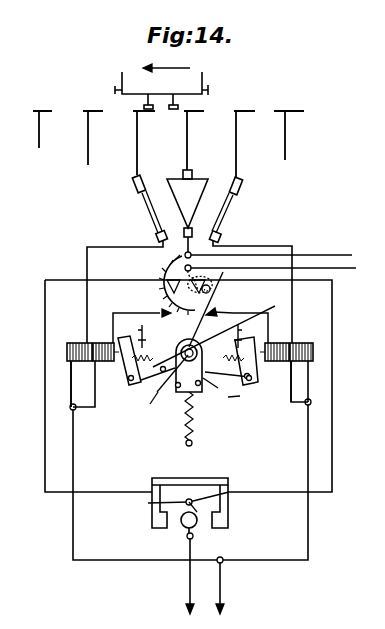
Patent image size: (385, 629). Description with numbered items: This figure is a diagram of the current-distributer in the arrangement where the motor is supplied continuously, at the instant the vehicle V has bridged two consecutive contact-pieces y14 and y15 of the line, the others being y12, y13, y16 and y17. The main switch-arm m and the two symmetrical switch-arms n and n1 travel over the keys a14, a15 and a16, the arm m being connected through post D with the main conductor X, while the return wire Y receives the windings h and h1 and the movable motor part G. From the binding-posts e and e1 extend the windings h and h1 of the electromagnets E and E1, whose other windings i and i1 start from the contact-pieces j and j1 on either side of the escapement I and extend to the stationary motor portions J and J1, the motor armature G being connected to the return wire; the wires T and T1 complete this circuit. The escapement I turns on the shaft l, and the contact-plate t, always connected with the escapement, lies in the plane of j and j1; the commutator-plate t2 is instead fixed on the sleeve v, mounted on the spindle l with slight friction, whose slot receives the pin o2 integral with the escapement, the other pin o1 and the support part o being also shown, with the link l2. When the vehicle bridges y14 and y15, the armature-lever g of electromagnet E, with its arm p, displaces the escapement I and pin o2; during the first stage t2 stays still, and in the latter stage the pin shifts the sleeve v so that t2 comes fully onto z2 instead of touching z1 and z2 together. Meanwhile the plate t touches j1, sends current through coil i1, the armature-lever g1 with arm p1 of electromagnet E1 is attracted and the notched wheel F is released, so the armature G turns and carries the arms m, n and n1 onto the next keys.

The vehicle V is at (161, 86).
The contact-piece y12 is at (35, 129).
The contact-piece y13 is at (85, 138).
The contact-piece y14 is at (135, 143).
The contact-piece y15 is at (186, 140).
The contact-piece y16 is at (236, 144).
The contact-piece y17 is at (285, 135).
The key a14 is at (127, 184).
The key a15 is at (193, 176).
The key a16 is at (250, 183).
The main switch-arm m is at (187, 203).
The insulated post D is at (196, 226).
The switch-arm n is at (148, 211).
The switch-arm n1 is at (222, 212).
The binding-post e is at (152, 238).
The binding-post e1 is at (226, 238).
The main conductor X is at (352, 249).
The return conductor Y is at (271, 277).
The contact z1 is at (166, 288).
The contact z2 is at (215, 286).
The contact-plate t is at (210, 307).
The commutator-plate t2 is at (211, 284).
The contact-piece j is at (144, 326).
The contact-piece j1 is at (237, 317).
The shaft l is at (214, 335).
The link l2 is at (227, 349).
The winding h is at (79, 342).
The winding i is at (106, 342).
The winding i1 is at (274, 342).
The winding h1 is at (301, 342).
The electromagnet E is at (78, 384).
The electromagnet E1 is at (297, 381).
The notched wheel F is at (143, 343).
The sleeve v is at (228, 343).
The armature-lever g is at (140, 363).
The armature-lever g1 is at (256, 363).
The support part o is at (180, 349).
The escapement I is at (189, 365).
The pin o1 is at (213, 391).
The pin o2 is at (169, 379).
The arm p is at (144, 406).
The arm p1 is at (239, 406).
The stationary motor portion J is at (148, 522).
The stationary motor portion J1 is at (232, 521).
The movable motor part G is at (198, 524).
The line wire T1 is at (199, 579).
The line wire T is at (228, 588).